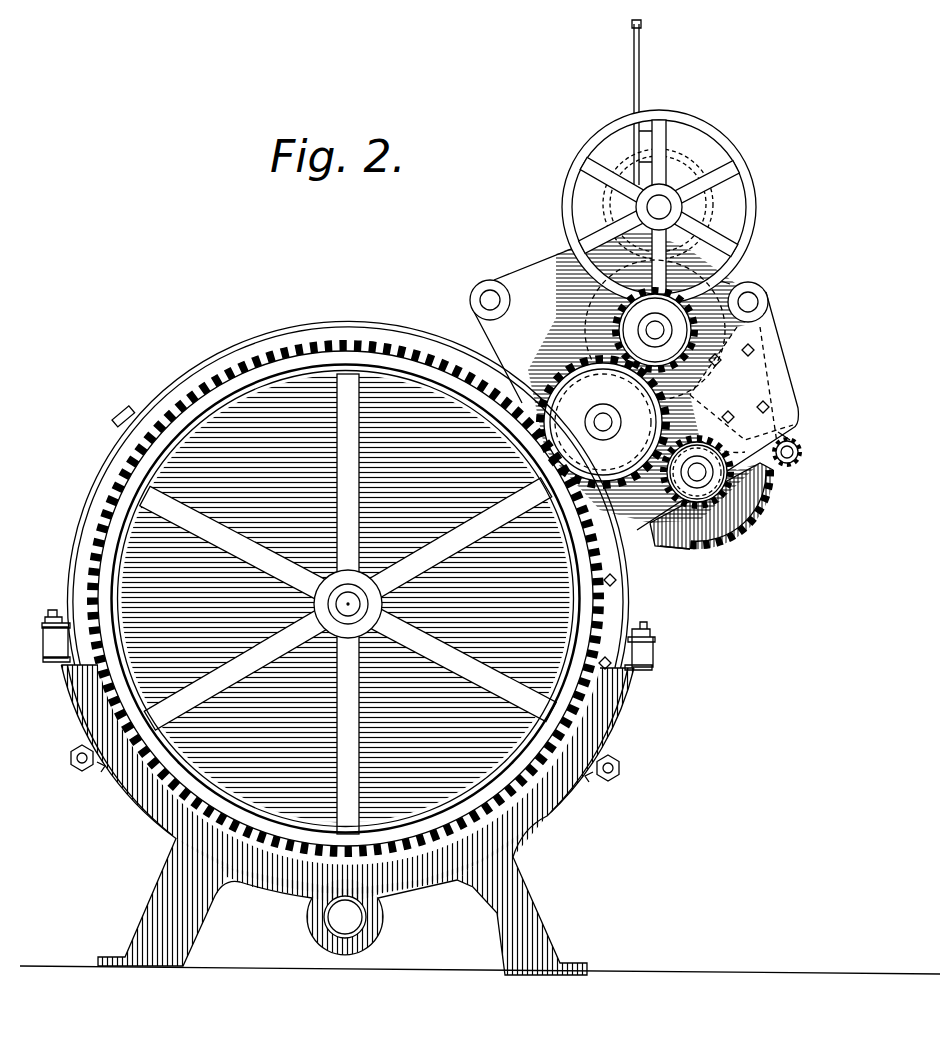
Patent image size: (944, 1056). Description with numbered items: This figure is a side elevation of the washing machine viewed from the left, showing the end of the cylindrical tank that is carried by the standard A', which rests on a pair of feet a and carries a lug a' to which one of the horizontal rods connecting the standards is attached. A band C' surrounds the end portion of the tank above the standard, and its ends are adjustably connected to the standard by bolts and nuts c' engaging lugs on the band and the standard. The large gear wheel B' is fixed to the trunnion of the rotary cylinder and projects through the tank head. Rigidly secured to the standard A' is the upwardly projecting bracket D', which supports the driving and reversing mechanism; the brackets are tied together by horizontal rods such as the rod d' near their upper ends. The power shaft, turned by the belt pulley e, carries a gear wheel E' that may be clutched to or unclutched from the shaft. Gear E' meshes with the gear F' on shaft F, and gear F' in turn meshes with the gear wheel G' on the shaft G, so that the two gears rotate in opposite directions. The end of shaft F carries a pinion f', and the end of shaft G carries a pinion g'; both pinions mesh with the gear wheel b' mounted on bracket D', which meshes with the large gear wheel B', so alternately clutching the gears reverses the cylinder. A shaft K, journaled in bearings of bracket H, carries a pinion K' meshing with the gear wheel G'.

The feet a is at (347, 820).
The lug a' is at (371, 782).
The standard A' is at (348, 729).
The large gear wheel B' is at (346, 565).
The gear wheel b' is at (603, 422).
The band C' is at (348, 494).
The bolts and nuts c' is at (354, 750).
The bracket D' is at (650, 450).
The horizontal rod d' is at (484, 274).
The belt pulley e is at (742, 158).
The gear wheel E' is at (674, 175).
The gear F' is at (620, 330).
The pinion f' is at (722, 409).
The shaft G is at (734, 490).
The gear wheel G' is at (716, 517).
The pinion g' is at (700, 571).
The shaft K is at (807, 416).
The pinion K' is at (804, 444).